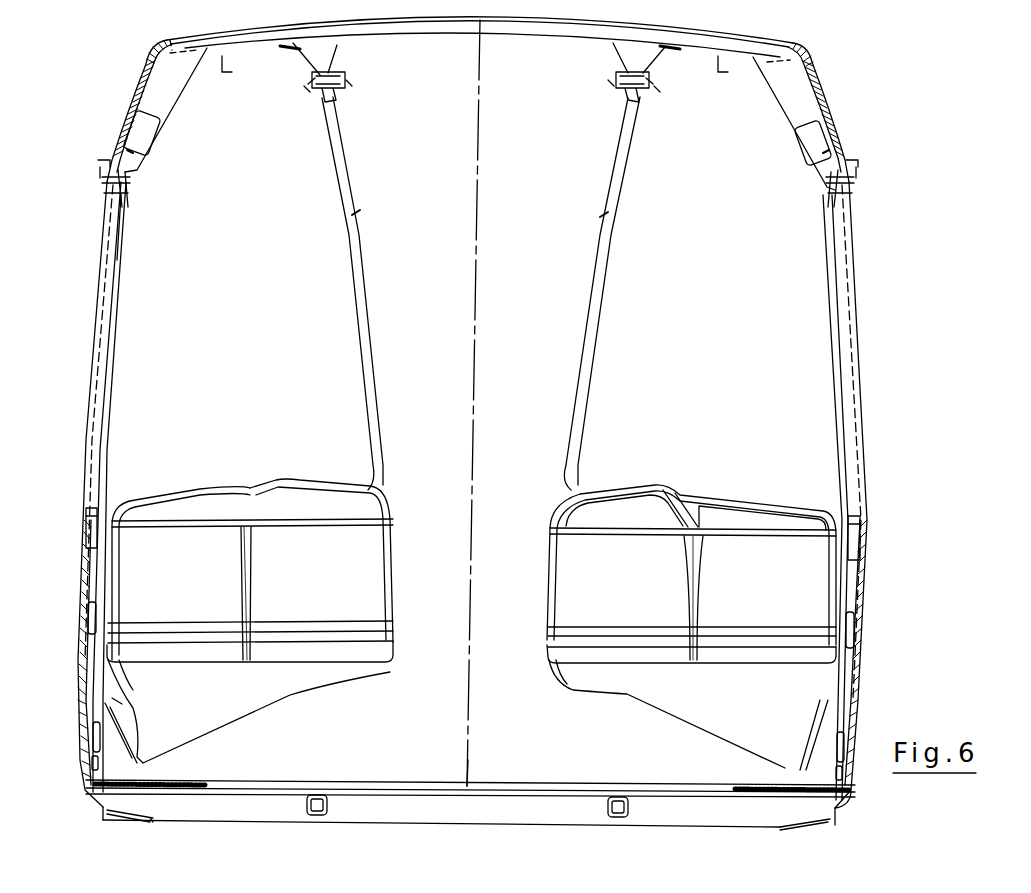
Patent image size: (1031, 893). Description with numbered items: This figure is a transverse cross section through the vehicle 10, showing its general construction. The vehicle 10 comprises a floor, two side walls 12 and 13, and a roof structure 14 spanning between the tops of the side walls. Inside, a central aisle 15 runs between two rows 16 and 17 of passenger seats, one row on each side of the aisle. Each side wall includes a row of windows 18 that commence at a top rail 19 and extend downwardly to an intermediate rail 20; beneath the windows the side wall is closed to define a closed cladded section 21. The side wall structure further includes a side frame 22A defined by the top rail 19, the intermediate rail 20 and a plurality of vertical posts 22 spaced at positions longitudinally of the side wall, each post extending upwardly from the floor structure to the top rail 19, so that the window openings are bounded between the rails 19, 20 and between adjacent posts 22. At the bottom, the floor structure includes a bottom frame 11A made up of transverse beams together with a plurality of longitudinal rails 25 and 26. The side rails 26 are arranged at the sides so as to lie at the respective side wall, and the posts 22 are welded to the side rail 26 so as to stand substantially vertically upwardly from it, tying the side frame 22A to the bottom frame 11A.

The vehicle 10 is at (856, 236).
The bottom frame 11A is at (523, 807).
The side wall 12 is at (110, 426).
The side wall 13 is at (815, 302).
The roof structure 14 is at (421, 27).
The central aisle 15 is at (529, 481).
The row of passenger seats 16 is at (209, 486).
The row of passenger seats 17 is at (735, 494).
The window 18 is at (110, 322).
The top rail 19 is at (130, 176).
The intermediate rail 20 is at (96, 538).
The closed cladded section 21 is at (869, 584).
The vertical post 22 is at (95, 592).
The side frame 22A is at (868, 621).
The longitudinal rail 25 is at (328, 806).
The side rail 26 is at (105, 805).